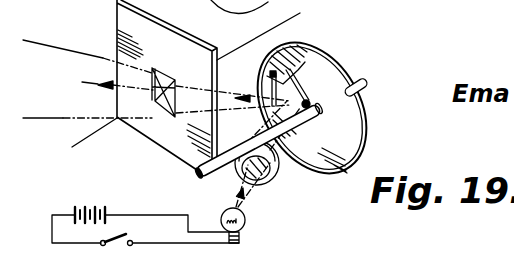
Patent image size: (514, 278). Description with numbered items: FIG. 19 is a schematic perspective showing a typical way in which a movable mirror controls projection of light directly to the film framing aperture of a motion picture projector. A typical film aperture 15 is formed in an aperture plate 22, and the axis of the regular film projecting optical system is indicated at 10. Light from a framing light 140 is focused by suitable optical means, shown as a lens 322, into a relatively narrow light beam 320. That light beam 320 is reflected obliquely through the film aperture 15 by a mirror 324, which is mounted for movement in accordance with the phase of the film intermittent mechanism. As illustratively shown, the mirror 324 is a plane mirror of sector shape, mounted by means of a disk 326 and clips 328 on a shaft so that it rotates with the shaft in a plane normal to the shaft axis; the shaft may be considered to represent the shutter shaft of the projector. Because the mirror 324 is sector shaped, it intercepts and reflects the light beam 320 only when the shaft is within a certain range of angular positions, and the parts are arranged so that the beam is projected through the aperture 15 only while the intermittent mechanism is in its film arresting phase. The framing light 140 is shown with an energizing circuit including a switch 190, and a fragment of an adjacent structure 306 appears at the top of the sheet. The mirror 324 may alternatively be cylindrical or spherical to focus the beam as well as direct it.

The axis of the regular film projecting optical system 10 is at (250, 42).
The film aperture 15 is at (167, 78).
The aperture plate 22 is at (120, 23).
The framing light 140 is at (244, 232).
The switch 190 is at (126, 235).
The element of adjacent figure 306 is at (425, 4).
The light beam 320 is at (128, 87).
The lens 322 is at (272, 180).
The mirror 324 is at (300, 68).
The disk 326 is at (342, 114).
The clips 328 is at (313, 89).